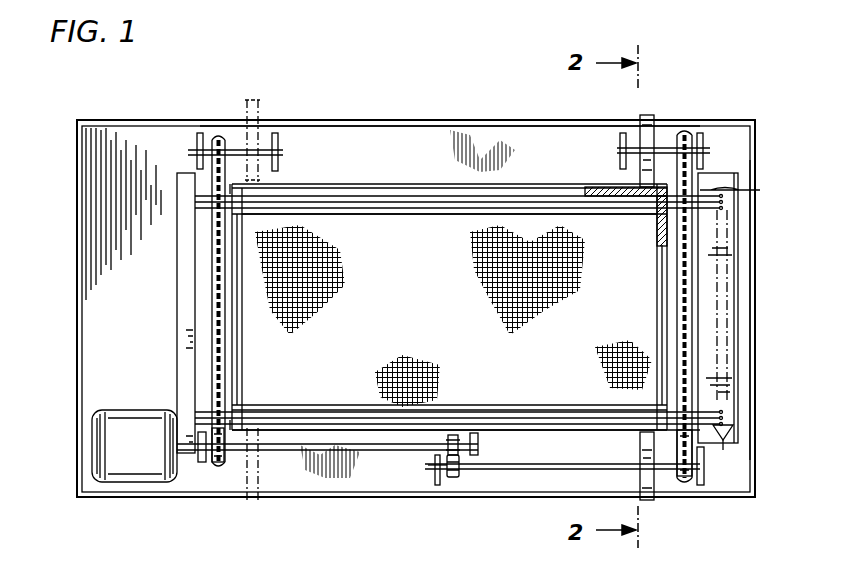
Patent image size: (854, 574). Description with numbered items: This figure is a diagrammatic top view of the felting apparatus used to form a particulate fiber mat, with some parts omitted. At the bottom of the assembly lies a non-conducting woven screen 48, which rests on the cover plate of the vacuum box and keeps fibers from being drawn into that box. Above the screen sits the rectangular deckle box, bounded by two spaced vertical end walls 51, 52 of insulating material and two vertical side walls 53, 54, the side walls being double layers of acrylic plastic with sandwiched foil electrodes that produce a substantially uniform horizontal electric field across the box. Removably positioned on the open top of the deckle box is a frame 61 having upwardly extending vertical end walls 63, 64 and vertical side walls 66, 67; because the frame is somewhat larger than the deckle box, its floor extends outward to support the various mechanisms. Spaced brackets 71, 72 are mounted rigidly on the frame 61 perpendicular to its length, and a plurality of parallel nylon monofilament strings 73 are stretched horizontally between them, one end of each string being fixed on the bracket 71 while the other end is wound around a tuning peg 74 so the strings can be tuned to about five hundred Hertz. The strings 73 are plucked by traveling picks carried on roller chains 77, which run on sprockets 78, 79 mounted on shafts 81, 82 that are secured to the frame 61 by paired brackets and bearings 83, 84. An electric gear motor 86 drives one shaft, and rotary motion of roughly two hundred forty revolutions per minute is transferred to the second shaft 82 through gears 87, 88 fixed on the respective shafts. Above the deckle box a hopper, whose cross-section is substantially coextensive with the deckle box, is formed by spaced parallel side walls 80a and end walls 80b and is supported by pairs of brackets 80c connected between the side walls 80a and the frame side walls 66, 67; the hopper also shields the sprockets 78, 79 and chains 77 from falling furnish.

The woven screen 48 is at (453, 304).
The end wall 51 is at (246, 380).
The end wall 52 is at (656, 325).
The side wall 53 is at (378, 432).
The side wall 54 is at (402, 186).
The frame 61 is at (70, 298).
The end wall 63 is at (84, 260).
The end wall 64 is at (752, 352).
The side wall 66 is at (282, 498).
The side wall 67 is at (368, 125).
The bracket 71 is at (177, 329).
The bracket 72 is at (738, 266).
The nylon monofilament strings 73 is at (352, 216).
The tuning pegs 74 is at (743, 331).
The roller chains 77 is at (210, 372).
The sprocket 78 is at (220, 140).
The sprocket 79 is at (680, 482).
The side wall 80a is at (588, 188).
The end wall 80b is at (656, 234).
The brackets 80c is at (252, 98).
The shaft 81 is at (256, 150).
The shaft 82 is at (365, 452).
The brackets and bearings 83 is at (200, 132).
The brackets and bearings 84 is at (705, 486).
The electric gear motor 86 is at (132, 476).
The gear 87 is at (452, 434).
The gear 88 is at (453, 480).